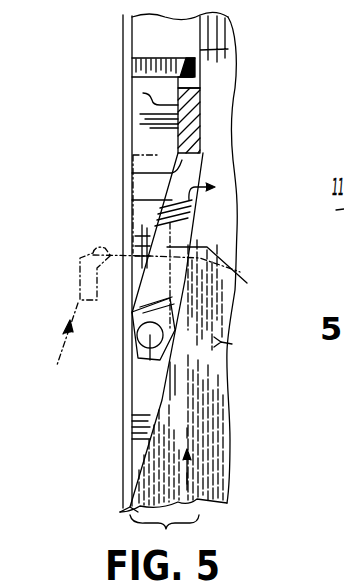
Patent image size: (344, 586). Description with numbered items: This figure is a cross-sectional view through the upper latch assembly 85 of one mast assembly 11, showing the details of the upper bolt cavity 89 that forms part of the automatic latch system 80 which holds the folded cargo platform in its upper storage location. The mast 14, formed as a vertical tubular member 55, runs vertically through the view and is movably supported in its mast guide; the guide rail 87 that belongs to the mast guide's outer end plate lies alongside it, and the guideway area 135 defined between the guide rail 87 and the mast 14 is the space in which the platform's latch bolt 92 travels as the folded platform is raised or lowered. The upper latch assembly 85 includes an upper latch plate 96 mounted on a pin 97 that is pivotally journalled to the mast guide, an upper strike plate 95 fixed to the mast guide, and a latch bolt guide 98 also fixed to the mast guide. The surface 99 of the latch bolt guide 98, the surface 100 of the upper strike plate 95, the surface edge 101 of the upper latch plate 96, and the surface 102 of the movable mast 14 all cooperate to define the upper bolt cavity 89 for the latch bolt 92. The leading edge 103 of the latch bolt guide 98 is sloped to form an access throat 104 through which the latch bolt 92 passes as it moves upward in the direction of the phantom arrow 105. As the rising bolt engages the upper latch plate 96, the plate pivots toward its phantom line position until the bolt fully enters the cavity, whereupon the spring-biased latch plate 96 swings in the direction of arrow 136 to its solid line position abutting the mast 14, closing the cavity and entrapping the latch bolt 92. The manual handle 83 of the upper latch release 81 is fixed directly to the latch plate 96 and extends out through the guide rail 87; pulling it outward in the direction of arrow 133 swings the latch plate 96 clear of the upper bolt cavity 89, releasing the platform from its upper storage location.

The mast assembly 11 is at (238, 23).
The mast 14 is at (213, 92).
The vertical tubular member 55 is at (221, 342).
The automatic latch system 80 is at (252, 238).
The latch release 81 is at (71, 347).
The manual handle 83 is at (93, 250).
The upper latch assembly 85 is at (242, 203).
The guide rail 87 is at (128, 508).
The upper bolt cavity 89 is at (200, 86).
The latch bolt 92 is at (100, 131).
The upper strike plate 95 is at (170, 61).
The upper latch plate 96 is at (185, 272).
The pin 97 is at (142, 362).
The latch bolt guide 98 is at (150, 391).
The surface of the latch bolt guide 99 is at (143, 108).
The surface of the upper strike plate 100 is at (200, 57).
The surface edge of the upper latch plate 101 is at (132, 173).
The surface of the movable mast 102 is at (143, 93).
The leading edge of the latch bolt guide 103 is at (153, 443).
The access throat 104 is at (187, 433).
The phantom arrow 105 is at (187, 478).
The arrow 133 is at (78, 260).
The guideway area 135 is at (199, 522).
The arrow 136 is at (132, 200).